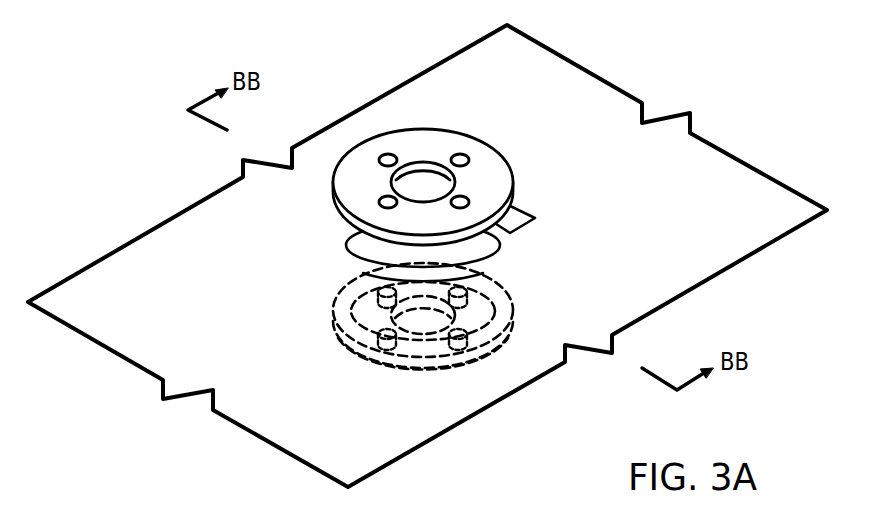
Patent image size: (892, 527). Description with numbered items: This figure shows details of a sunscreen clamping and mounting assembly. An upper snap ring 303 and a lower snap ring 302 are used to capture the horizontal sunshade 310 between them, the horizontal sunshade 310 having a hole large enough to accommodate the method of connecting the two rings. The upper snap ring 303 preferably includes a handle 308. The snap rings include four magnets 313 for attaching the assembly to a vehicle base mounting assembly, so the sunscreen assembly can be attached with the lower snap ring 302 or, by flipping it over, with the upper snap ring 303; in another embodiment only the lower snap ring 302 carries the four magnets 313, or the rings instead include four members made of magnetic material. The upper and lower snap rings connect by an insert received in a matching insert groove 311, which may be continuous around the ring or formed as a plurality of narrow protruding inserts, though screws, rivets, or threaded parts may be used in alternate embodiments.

The horizontal sunshade 310 is at (210, 205).
The upper snap ring 303 is at (357, 172).
The lower snap ring 302 is at (508, 316).
The handle 308 is at (510, 233).
The snap ring magnets 313 is at (472, 338).
The insert groove 311 is at (437, 357).